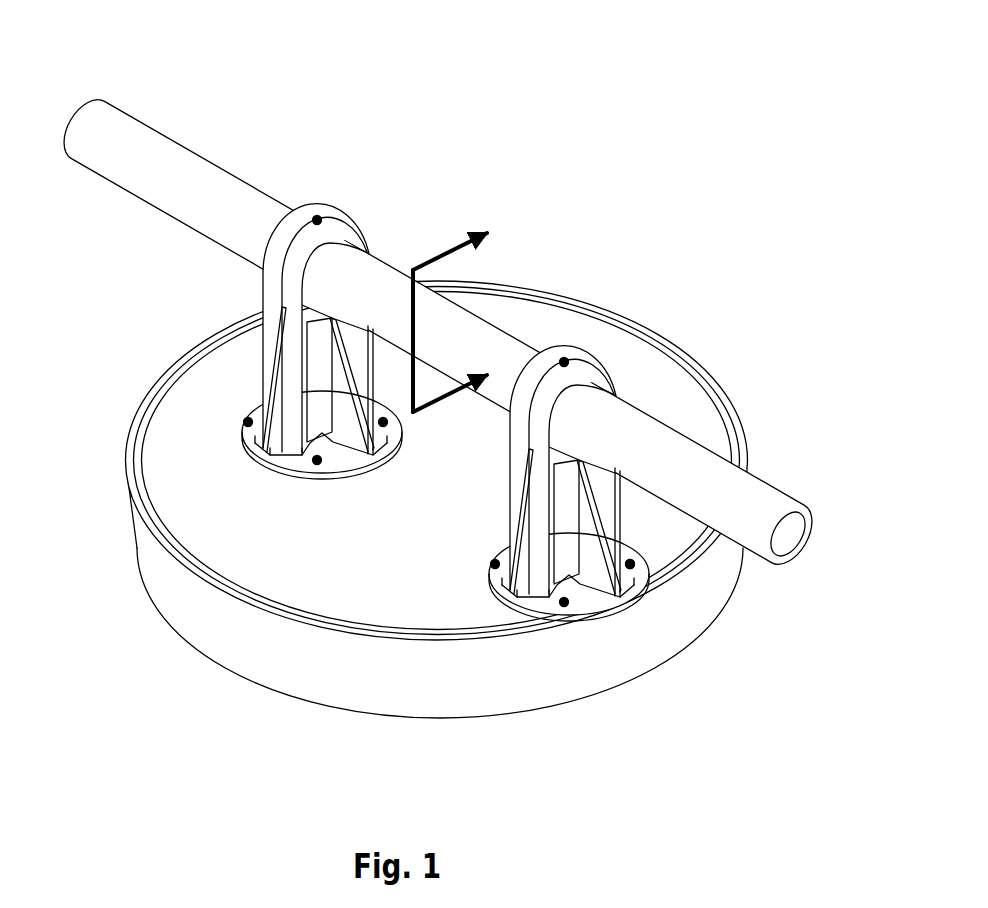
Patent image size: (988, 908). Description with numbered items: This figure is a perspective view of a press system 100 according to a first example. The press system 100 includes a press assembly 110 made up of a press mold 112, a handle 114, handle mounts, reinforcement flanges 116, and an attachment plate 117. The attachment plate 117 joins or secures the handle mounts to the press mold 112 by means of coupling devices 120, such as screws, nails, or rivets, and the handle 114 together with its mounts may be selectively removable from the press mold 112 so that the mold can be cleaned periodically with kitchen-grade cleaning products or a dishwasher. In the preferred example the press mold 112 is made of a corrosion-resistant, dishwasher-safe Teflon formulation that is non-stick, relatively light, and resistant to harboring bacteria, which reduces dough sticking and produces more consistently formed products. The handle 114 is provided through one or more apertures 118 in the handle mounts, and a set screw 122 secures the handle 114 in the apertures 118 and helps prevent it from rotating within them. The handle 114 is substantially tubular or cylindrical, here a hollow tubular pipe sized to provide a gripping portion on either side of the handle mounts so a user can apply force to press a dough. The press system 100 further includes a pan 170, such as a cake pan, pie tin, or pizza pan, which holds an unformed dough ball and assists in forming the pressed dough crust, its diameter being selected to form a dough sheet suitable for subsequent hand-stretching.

The press system 100 is at (468, 367).
The press assembly 110 is at (464, 352).
The press mold 112 is at (292, 573).
The handle 114 is at (136, 127).
The reinforcement flanges 116 is at (262, 392).
The attachment plate 117 is at (580, 596).
The apertures 118 is at (370, 246).
The coupling devices 120 is at (640, 566).
The set screw 122 is at (566, 360).
The pan 170 is at (684, 381).